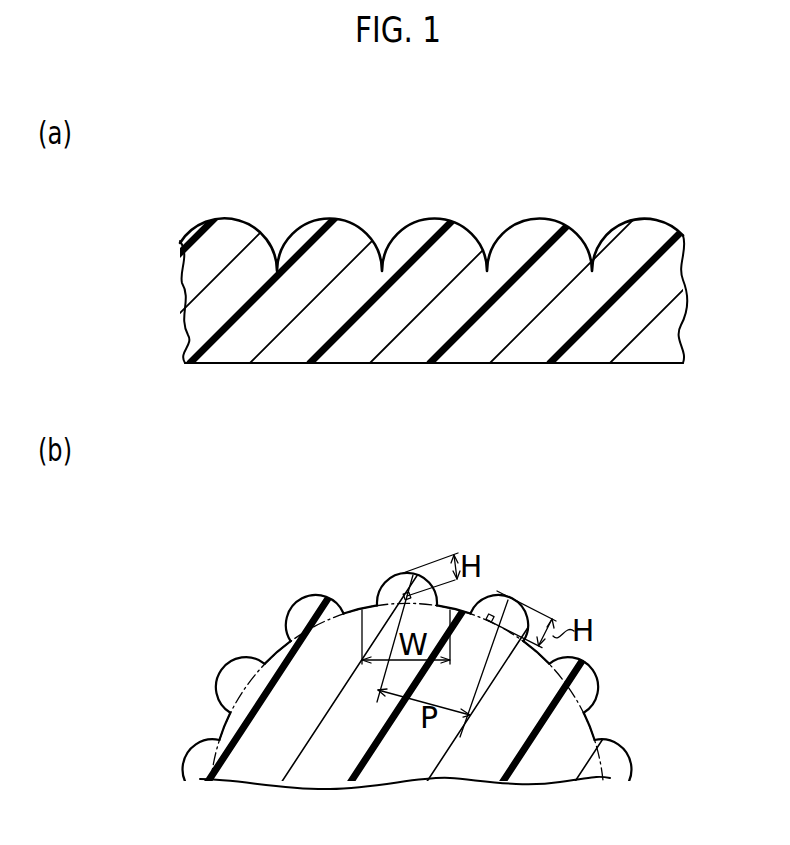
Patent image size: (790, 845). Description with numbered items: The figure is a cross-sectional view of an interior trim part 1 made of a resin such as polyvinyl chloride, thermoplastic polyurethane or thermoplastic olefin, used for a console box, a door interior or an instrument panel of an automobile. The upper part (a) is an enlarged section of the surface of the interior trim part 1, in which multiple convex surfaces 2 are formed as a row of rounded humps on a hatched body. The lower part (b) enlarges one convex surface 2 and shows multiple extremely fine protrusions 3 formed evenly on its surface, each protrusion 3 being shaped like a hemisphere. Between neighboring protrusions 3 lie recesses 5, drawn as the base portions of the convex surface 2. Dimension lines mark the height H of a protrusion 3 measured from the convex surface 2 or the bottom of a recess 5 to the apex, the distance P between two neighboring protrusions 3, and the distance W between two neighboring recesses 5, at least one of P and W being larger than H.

The interior trim part 1 is at (594, 152).
The convex surface 2 is at (396, 445).
The protrusion 3 is at (377, 598).
The recess 5 is at (283, 652).